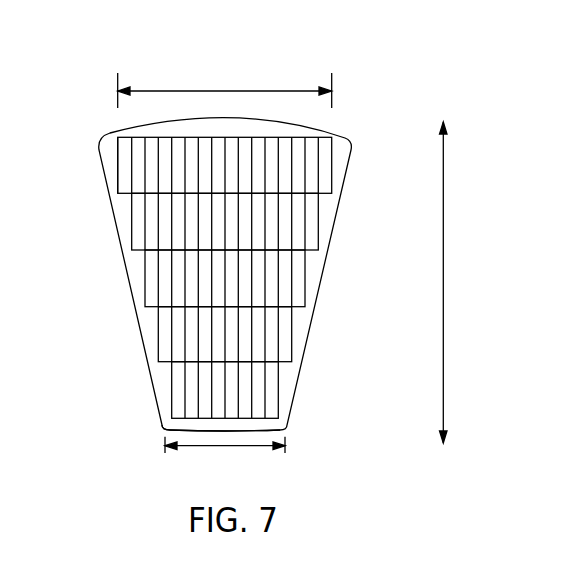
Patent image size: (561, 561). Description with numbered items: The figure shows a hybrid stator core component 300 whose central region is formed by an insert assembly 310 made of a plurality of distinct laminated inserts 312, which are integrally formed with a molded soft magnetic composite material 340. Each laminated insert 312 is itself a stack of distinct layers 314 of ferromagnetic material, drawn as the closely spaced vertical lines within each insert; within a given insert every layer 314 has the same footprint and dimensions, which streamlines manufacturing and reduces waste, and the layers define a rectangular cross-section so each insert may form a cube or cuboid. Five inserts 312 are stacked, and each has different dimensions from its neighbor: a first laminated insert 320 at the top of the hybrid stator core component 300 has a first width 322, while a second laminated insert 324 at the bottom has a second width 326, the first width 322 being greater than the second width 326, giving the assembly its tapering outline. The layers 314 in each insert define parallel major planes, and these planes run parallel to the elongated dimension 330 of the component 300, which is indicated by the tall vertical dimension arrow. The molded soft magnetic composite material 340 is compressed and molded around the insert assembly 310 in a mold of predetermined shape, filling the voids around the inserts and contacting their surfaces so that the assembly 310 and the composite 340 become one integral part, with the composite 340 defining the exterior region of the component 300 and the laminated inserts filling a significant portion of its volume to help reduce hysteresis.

The hybrid stator core component 300 is at (227, 243).
The insert assembly 310 is at (197, 137).
The laminated insert 312 is at (270, 211).
The layers 314 is at (172, 195).
The first laminated insert 320 is at (118, 168).
The first width 322 is at (263, 91).
The second laminated insert 324 is at (165, 398).
The second width 326 is at (257, 448).
The elongated dimension 330 is at (443, 375).
The molded soft magnetic composite material 340 is at (312, 272).